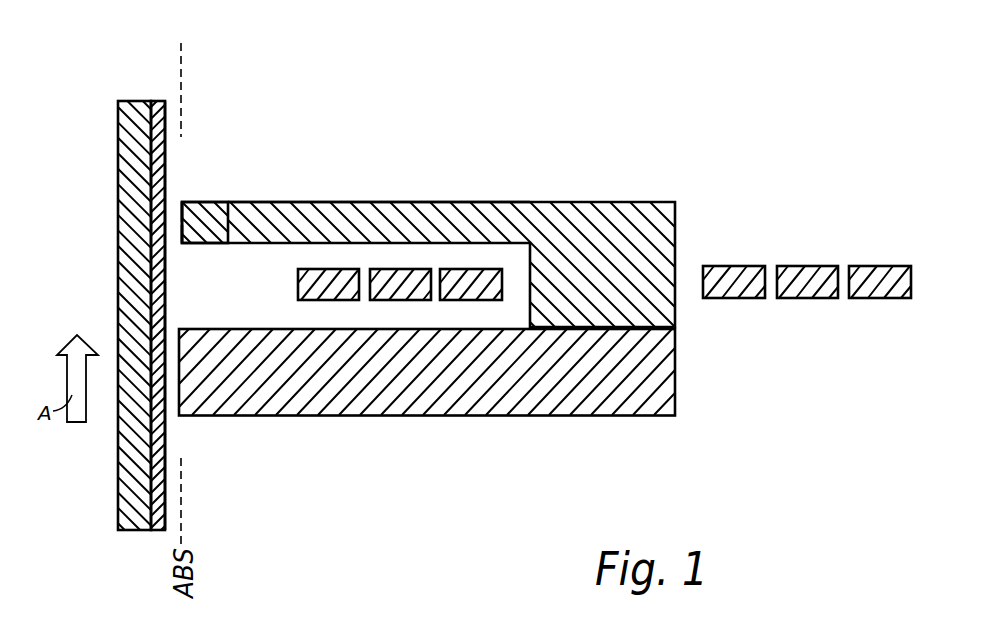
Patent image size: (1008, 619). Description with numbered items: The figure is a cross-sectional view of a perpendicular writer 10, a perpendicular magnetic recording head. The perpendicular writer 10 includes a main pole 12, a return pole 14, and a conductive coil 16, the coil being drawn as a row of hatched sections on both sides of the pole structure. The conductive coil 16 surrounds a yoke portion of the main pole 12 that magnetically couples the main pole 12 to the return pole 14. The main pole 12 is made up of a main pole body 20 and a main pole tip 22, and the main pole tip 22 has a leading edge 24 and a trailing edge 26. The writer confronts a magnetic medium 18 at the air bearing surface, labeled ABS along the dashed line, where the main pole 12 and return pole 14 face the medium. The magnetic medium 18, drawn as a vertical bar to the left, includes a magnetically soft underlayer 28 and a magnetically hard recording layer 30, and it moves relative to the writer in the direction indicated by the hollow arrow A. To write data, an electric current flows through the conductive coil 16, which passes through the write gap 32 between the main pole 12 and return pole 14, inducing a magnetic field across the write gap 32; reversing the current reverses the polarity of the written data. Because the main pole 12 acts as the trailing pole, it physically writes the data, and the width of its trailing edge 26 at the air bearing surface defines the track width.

The perpendicular writer 10 is at (545, 274).
The main pole 12 is at (478, 221).
The return pole 14 is at (297, 416).
The conductive coil 16 is at (490, 266).
The magnetic medium 18 is at (97, 304).
The main pole body 20 is at (312, 220).
The main pole tip 22 is at (207, 228).
The leading edge 24 is at (183, 250).
The trailing edge 26 is at (182, 195).
The magnetically soft underlayer 28 is at (142, 175).
The magnetically hard recording layer 30 is at (160, 337).
The write gap 32 is at (178, 285).